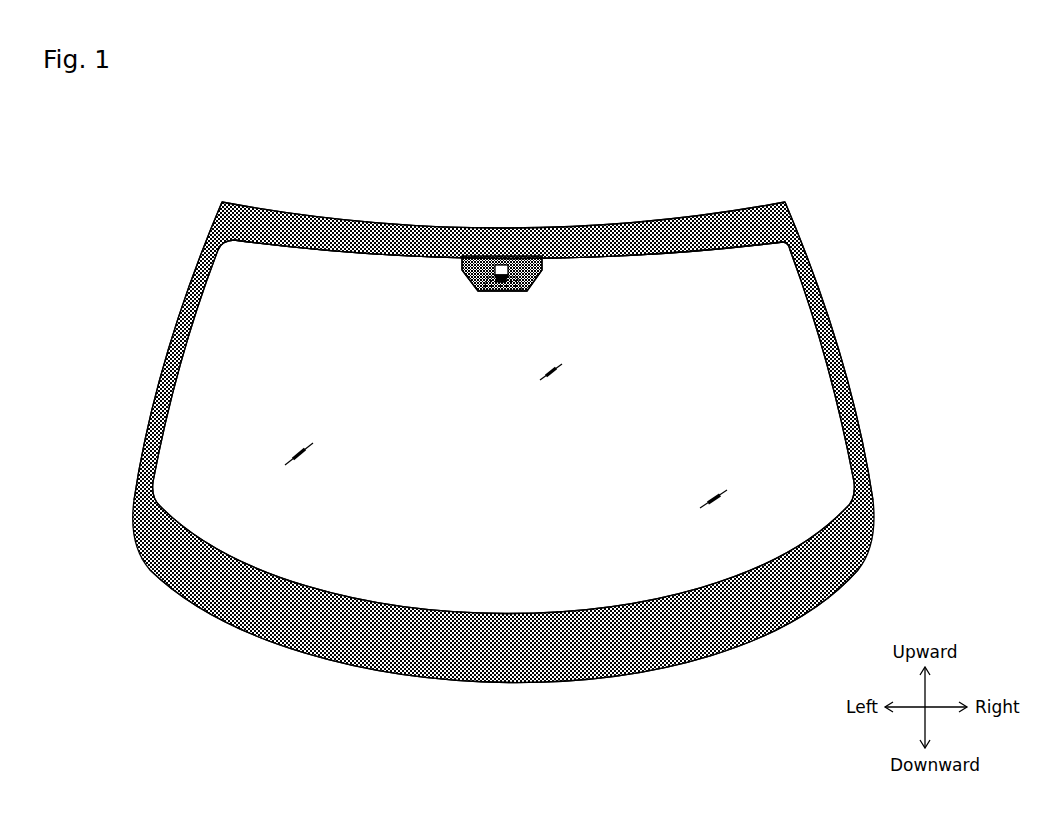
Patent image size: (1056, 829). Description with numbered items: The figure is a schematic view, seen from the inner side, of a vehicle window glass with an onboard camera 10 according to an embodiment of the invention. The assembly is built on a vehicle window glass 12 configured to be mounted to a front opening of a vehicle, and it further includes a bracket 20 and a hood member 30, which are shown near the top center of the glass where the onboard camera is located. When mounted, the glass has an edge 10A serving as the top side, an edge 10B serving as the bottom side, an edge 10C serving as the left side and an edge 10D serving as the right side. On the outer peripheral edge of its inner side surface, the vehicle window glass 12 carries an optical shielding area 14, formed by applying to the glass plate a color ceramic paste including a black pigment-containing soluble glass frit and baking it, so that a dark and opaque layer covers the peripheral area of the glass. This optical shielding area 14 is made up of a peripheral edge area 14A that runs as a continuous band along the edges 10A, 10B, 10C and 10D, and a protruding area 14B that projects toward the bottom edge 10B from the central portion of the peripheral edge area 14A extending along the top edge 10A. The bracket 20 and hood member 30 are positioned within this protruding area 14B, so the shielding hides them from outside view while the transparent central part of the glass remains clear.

The vehicle window glass with an onboard camera 10 is at (552, 165).
The edge 10A is at (448, 226).
The edge 10B is at (510, 683).
The edge 10C is at (147, 417).
The edge 10D is at (858, 418).
The vehicle window glass 12 is at (798, 360).
The optical shielding area 14 is at (690, 195).
The peripheral edge area 14A is at (626, 232).
The protruding area 14B is at (465, 282).
The bracket 20 is at (528, 276).
The hood member 30 is at (503, 292).